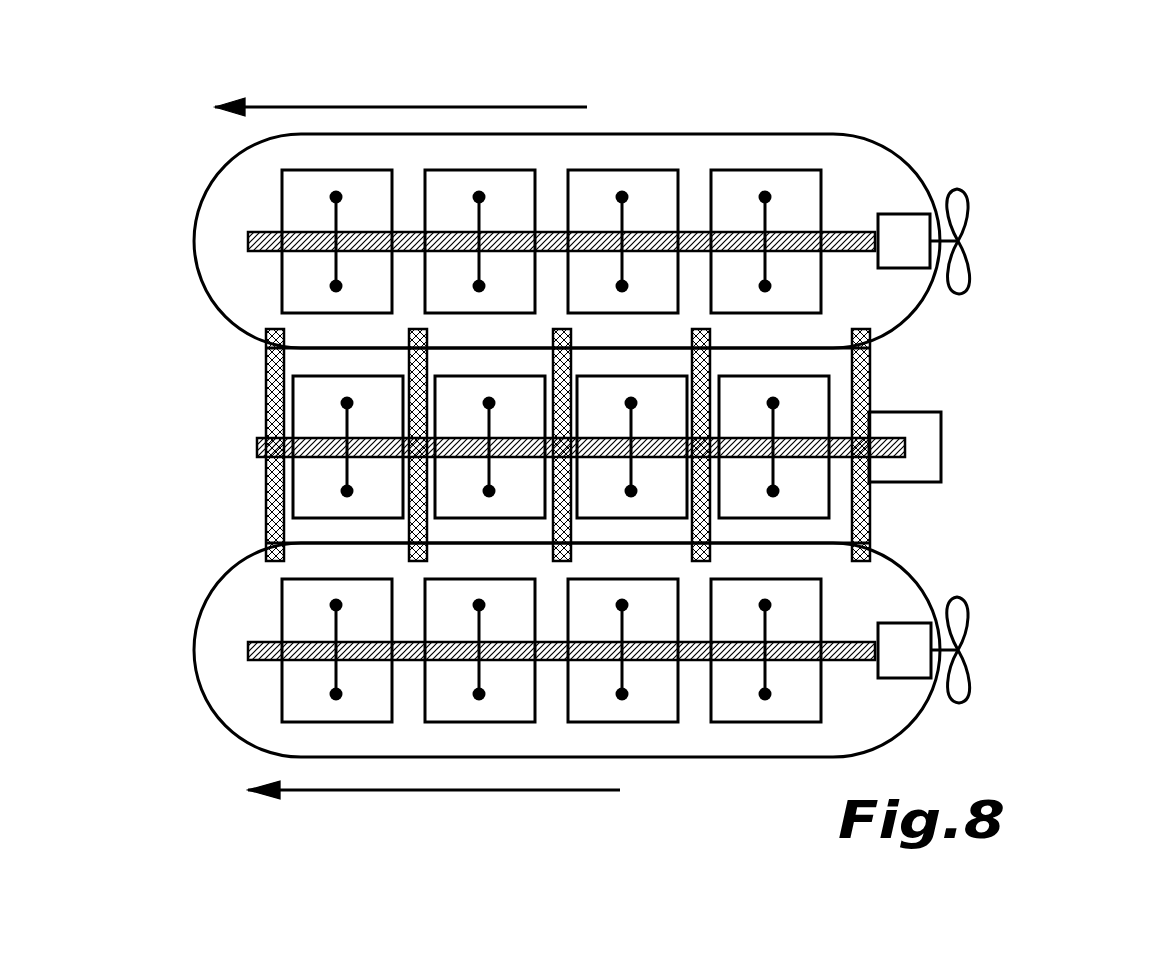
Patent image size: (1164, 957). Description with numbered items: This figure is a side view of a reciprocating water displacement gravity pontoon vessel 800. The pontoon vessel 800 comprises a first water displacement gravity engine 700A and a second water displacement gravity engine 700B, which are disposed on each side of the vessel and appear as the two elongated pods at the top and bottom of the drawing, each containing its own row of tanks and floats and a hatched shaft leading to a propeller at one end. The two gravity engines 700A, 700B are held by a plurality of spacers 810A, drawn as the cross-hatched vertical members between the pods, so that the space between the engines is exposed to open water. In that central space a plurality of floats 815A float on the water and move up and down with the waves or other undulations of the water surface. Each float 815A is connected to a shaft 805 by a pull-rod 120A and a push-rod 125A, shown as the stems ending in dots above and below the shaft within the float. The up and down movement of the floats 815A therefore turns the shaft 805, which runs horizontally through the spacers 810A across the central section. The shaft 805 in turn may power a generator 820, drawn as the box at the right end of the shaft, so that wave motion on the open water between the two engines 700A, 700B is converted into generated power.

The reciprocating water displacement gravity pontoon vessel 800 is at (993, 151).
The first water displacement gravity engine 700A is at (639, 99).
The second water displacement gravity engine 700B is at (638, 793).
The shaft 805 is at (257, 448).
The spacer 810A is at (266, 500).
The float 815A is at (301, 398).
The pull-rod 120A is at (345, 497).
The push-rod 125A is at (345, 398).
The generator 820 is at (943, 448).